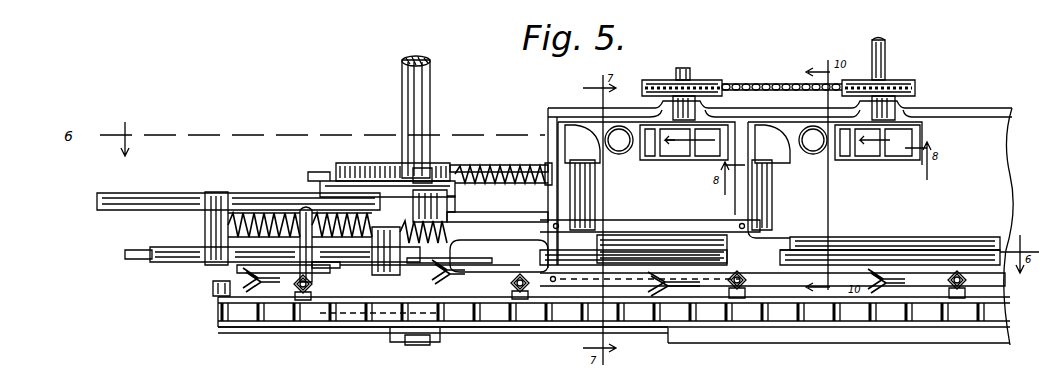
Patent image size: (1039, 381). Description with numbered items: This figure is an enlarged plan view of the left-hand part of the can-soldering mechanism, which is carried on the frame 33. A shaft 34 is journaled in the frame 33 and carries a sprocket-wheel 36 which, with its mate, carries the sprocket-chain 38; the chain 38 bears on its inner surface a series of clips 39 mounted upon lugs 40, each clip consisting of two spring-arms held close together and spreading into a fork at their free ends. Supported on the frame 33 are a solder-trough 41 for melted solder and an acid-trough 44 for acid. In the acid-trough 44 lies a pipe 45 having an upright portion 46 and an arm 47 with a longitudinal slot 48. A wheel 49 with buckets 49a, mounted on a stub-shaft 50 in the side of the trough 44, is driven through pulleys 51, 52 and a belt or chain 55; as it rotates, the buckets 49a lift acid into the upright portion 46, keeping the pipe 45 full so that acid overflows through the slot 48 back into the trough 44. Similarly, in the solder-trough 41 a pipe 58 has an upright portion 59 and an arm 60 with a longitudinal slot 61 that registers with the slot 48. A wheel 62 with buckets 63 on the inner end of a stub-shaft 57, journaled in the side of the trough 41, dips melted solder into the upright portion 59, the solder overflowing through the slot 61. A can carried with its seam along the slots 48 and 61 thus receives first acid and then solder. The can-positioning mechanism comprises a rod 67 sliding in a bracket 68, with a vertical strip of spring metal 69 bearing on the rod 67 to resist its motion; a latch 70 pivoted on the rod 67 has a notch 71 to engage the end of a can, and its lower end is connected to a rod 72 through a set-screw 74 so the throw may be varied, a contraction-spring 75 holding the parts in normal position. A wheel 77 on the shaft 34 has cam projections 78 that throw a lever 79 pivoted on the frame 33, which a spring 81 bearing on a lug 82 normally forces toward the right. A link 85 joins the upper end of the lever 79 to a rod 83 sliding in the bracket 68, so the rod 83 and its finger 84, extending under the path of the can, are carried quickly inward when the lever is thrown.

The frame 33 is at (497, 208).
The shaft 34 is at (406, 97).
The sprocket-wheel 36 is at (385, 325).
The sprocket-chain 38 is at (812, 328).
The clips 39 is at (690, 286).
The lugs 40 is at (737, 292).
The solder-trough 41 is at (780, 223).
The acid-trough 44 is at (646, 193).
The pipe 45 is at (585, 206).
The upright portion 46 is at (619, 140).
The arm 47 is at (680, 240).
The longitudinal slot 48 is at (640, 255).
The wheel 49 is at (705, 140).
The buckets 49a is at (668, 142).
The stub-shaft 50 is at (683, 72).
The pulley 51 is at (715, 84).
The pulley 52 is at (889, 88).
The belt or chain 55 is at (762, 85).
The stub-shaft 57 is at (884, 56).
The pipe 58 is at (770, 198).
The upright portion 59 is at (835, 180).
The arm 60 is at (910, 240).
The longitudinal slot 61 is at (850, 250).
The wheel 62 is at (895, 150).
The buckets 63 is at (882, 148).
The rod 67 is at (190, 256).
The bracket 68 is at (212, 232).
The vertical strip of spring metal 69 is at (320, 266).
The latch 70 is at (458, 262).
The notch 71 is at (485, 261).
The rod 72 is at (138, 250).
The set-screw 74 is at (455, 222).
The spring 75 is at (262, 214).
The wheel 77 is at (405, 168).
The cam projections 78 is at (382, 175).
The lever 79 is at (456, 172).
The spring 81 is at (501, 165).
The lug 82 is at (545, 172).
The rod 83 is at (158, 200).
The finger 84 is at (300, 210).
The link 85 is at (355, 180).